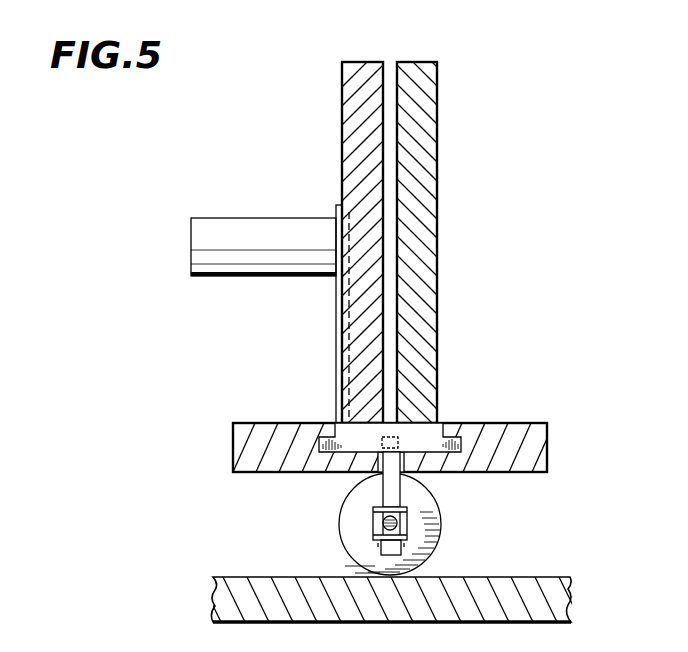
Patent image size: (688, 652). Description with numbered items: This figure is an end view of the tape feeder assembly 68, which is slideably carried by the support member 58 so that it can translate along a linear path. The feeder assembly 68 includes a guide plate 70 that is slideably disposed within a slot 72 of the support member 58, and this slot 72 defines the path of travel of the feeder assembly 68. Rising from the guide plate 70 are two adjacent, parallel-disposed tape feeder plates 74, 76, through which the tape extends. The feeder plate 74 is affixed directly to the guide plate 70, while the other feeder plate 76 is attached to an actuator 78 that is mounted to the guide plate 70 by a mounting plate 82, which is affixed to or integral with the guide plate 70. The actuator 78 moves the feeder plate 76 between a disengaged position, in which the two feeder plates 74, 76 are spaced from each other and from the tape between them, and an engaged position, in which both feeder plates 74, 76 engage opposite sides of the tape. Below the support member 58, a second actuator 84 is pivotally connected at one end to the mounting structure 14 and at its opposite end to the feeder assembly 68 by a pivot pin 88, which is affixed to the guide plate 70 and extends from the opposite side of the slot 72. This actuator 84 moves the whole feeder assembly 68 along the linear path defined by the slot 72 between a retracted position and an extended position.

The mounting structure 14 is at (537, 585).
The support member 58 is at (402, 447).
The tape feeder assembly 68 is at (399, 237).
The guide plate 70 is at (432, 435).
The slot 72 is at (375, 462).
The tape feeder plate 74 is at (425, 105).
The tape feeder plate 76 is at (348, 100).
The actuator 78 is at (220, 227).
The mounting plate 82 is at (337, 303).
The actuator 84 is at (347, 525).
The pivot pin 88 is at (389, 488).